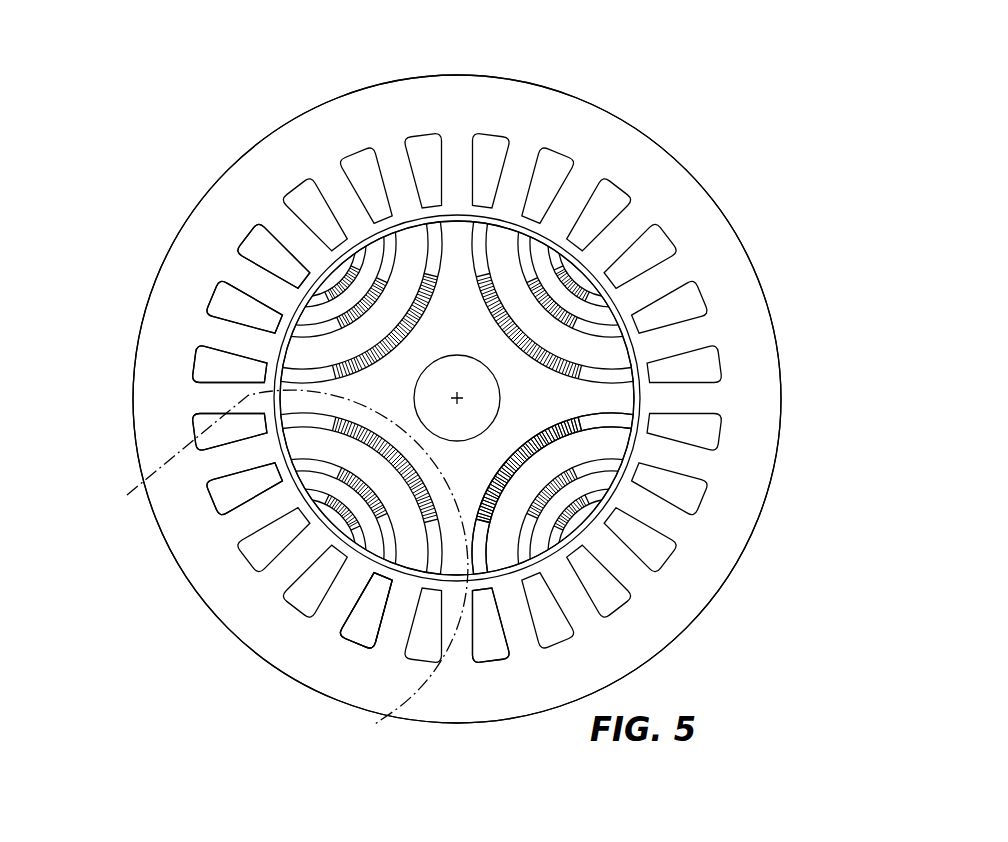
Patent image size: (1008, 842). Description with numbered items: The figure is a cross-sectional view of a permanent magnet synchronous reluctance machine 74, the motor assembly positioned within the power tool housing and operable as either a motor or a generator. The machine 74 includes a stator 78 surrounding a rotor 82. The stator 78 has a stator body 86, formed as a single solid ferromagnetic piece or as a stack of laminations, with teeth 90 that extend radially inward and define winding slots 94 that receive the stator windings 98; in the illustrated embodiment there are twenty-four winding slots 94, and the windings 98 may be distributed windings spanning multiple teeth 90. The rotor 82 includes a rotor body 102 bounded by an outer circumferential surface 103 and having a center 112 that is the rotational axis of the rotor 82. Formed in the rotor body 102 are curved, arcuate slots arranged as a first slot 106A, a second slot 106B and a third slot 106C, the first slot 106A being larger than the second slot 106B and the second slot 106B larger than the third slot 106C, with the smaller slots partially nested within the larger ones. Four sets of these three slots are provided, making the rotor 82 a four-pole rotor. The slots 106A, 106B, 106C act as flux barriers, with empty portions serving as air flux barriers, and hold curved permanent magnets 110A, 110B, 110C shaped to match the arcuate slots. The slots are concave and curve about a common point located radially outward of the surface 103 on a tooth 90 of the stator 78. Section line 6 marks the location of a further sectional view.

The permanent magnet synchronous reluctance machine 74 is at (258, 80).
The stator 78 is at (352, 88).
The rotor 82 is at (300, 508).
The stator body 86 is at (405, 105).
The teeth 90 is at (453, 163).
The winding slots 94 is at (485, 155).
The stator windings 98 is at (360, 162).
The rotor body 102 is at (482, 570).
The outer circumferential surface 103 is at (647, 435).
The first slot 106A is at (268, 362).
The second slot 106B is at (293, 290).
The third slot 106C is at (337, 162).
The first permanent magnet 110A is at (273, 333).
The second permanent magnet 110B is at (347, 318).
The third permanent magnet 110C is at (338, 273).
The center 112 is at (462, 395).
The section line 6- 6 is at (140, 484).